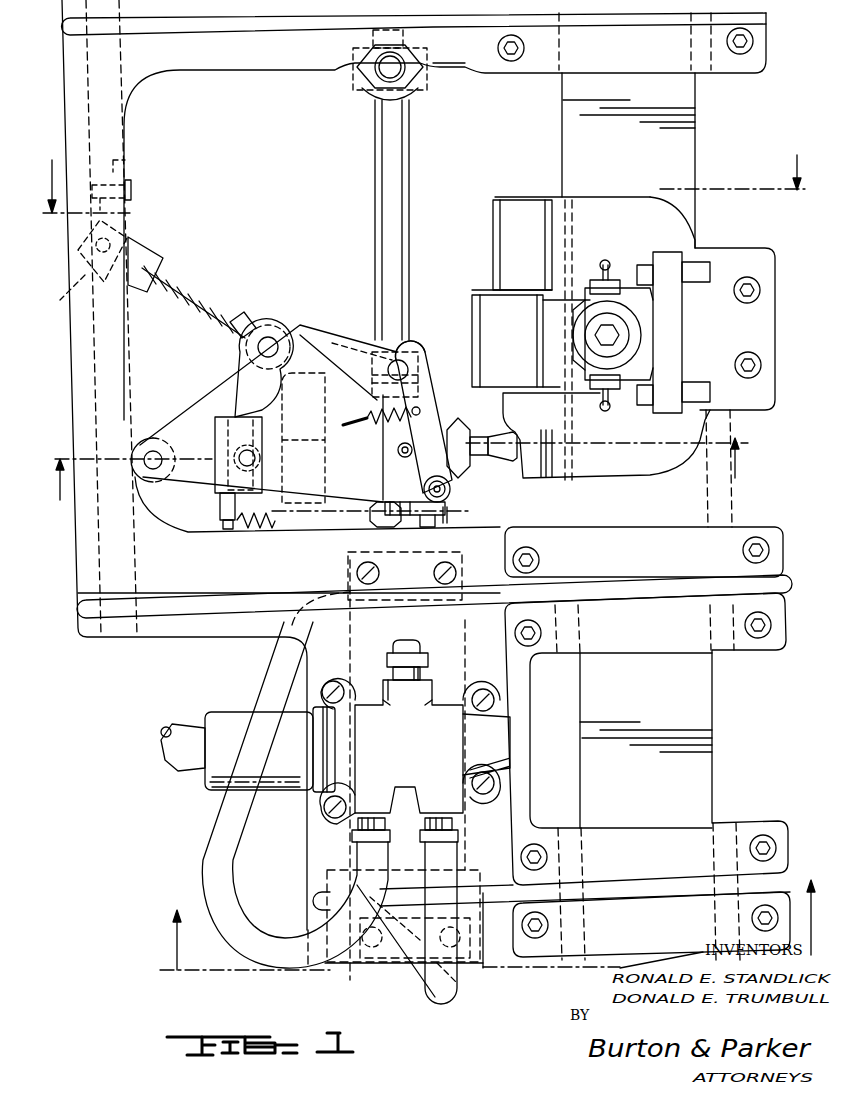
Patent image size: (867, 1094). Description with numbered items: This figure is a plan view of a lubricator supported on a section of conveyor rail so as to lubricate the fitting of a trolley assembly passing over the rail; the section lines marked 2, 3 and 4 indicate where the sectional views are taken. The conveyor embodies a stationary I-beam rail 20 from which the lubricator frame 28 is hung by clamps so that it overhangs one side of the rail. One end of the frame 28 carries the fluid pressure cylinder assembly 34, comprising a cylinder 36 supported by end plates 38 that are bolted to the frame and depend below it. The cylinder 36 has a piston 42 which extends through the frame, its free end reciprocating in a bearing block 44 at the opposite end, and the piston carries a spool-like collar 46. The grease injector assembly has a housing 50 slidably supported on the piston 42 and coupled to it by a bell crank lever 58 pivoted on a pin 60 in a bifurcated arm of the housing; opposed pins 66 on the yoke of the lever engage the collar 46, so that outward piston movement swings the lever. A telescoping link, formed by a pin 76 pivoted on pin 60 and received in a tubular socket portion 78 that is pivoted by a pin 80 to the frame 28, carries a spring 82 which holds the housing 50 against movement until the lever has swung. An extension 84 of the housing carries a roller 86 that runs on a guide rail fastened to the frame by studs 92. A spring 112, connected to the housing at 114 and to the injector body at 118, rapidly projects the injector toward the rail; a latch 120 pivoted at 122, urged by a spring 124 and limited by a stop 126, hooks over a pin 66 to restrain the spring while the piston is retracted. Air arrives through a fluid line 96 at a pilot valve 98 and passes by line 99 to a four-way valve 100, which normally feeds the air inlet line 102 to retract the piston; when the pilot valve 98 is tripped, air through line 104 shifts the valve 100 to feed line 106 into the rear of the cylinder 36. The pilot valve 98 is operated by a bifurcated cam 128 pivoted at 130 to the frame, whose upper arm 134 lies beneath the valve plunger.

The section line 2- 2 is at (424, 171).
The section line 3- 3 is at (495, 925).
The section line 4- 4 is at (401, 477).
The I-beam rail 20 is at (685, 137).
The frame 28 is at (295, 58).
The fluid pressure cylinder assembly 34 is at (292, 896).
The cylinder 36 is at (467, 665).
The end plates 38 is at (461, 557).
The piston 42 is at (410, 250).
The bearing block 44 is at (357, 85).
The spool-like collar 46 is at (425, 352).
The injector housing 50 is at (313, 357).
The bell crank lever 58 is at (367, 348).
The pin 60 is at (269, 335).
The pins 66 is at (428, 369).
The pin 76 is at (222, 326).
The tubular socket portion 78 is at (152, 258).
The pin 80 is at (77, 283).
The spring 82 is at (203, 288).
The extension 84 is at (185, 423).
The roller 86 is at (150, 437).
The studs 92 is at (132, 193).
The fluid line 96 is at (612, 270).
The pilot valve 98 is at (613, 408).
The line 99 is at (410, 642).
The four-way air valve 100 is at (415, 760).
The air inlet line 102 is at (212, 888).
The line 104 is at (626, 405).
The line 106 is at (438, 990).
The spring 112 is at (258, 528).
The spring connection 114 is at (445, 513).
The spring connection 118 is at (230, 525).
The latch 120 is at (428, 430).
The pivot 122 is at (427, 488).
The spring 124 is at (372, 430).
The stop 126 is at (400, 455).
The bifurcated cam 128 is at (480, 301).
The cam pivot 130 is at (520, 300).
The upper arm 134 is at (557, 373).